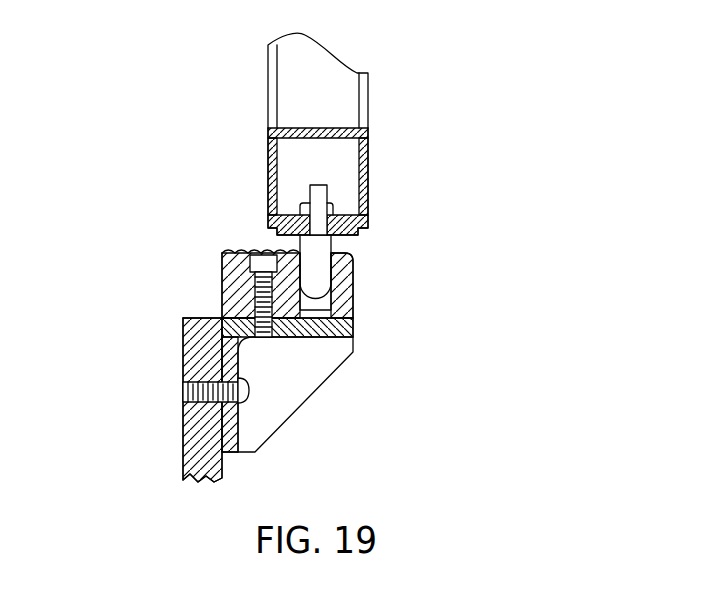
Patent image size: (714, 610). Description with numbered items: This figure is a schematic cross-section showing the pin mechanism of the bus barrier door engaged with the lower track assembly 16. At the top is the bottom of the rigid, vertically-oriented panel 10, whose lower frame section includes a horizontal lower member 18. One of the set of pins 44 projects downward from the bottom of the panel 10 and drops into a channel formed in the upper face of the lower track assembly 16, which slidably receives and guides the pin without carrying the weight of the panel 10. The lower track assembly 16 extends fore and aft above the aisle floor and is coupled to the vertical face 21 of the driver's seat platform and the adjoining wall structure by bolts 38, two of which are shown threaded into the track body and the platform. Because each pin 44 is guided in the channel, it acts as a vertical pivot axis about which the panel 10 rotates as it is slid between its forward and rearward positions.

The panel 10 is at (367, 93).
The horizontal lower member 18 is at (367, 173).
The pins 44 is at (333, 243).
The lower track assembly 16 is at (131, 314).
The vertical face of the driver's seat platform 21 is at (180, 443).
The bolts 38 is at (334, 301).